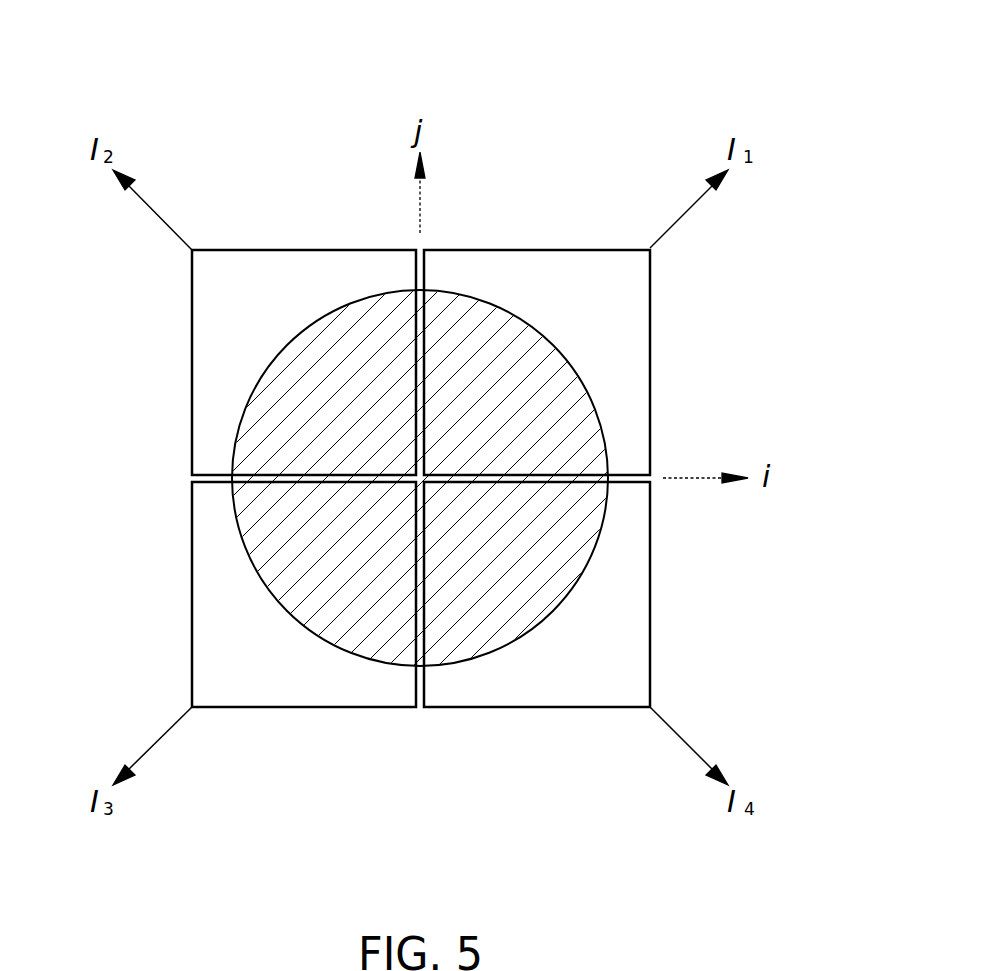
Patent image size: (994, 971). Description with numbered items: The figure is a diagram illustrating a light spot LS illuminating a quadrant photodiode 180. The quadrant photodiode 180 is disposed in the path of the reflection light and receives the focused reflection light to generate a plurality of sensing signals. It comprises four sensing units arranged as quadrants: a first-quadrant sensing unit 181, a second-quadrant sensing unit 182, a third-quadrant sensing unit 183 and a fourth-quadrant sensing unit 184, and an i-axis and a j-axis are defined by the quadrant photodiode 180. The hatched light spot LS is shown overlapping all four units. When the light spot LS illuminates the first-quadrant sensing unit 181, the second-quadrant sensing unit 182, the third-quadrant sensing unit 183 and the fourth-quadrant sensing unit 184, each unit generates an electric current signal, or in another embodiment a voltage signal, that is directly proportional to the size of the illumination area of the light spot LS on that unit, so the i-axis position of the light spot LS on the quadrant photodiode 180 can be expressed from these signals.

The quadrant photodiode 180 is at (421, 353).
The first-quadrant sensing unit 181 is at (617, 307).
The second-quadrant sensing unit 182 is at (227, 307).
The third-quadrant sensing unit 183 is at (227, 643).
The fourth-quadrant sensing unit 184 is at (617, 643).
The light spot LS is at (365, 607).